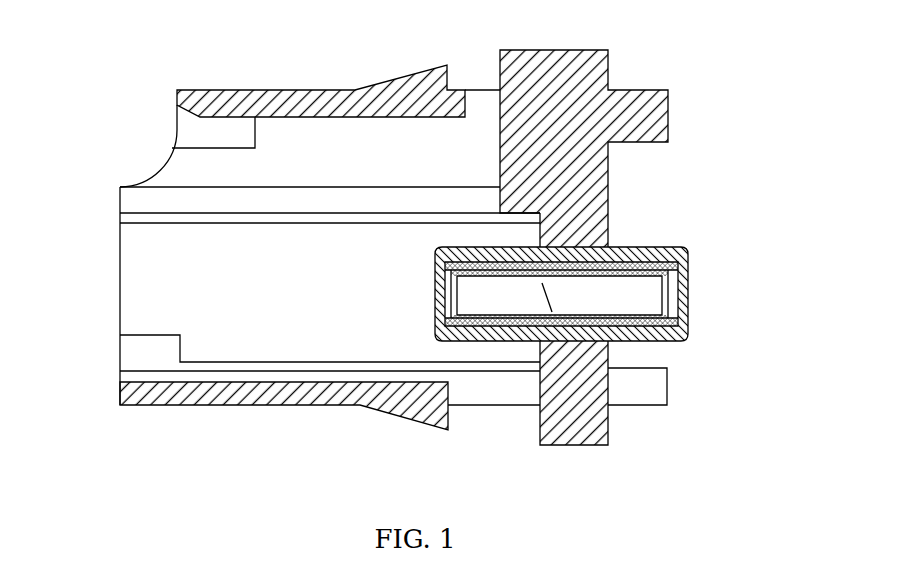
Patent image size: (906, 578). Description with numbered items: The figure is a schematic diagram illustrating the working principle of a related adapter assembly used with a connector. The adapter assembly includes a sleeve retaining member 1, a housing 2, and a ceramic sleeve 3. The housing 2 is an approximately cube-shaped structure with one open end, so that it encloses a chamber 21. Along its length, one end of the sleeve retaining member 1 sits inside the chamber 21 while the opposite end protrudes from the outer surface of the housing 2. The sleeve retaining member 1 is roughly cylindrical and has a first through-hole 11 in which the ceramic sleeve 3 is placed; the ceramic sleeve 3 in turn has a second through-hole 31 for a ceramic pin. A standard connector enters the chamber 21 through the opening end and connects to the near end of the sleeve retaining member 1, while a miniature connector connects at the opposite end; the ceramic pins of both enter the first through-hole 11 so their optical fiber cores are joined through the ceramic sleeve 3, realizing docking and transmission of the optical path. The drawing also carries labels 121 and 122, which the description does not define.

The sleeve retaining member 1 is at (561, 269).
The first through-hole 11 is at (690, 343).
The inner liner 121 is at (443, 302).
The outer liner 122 is at (677, 300).
The housing 2 is at (470, 90).
The chamber 21 is at (175, 235).
The ceramic sleeve 3 is at (604, 253).
The second through-hole 31 is at (607, 420).